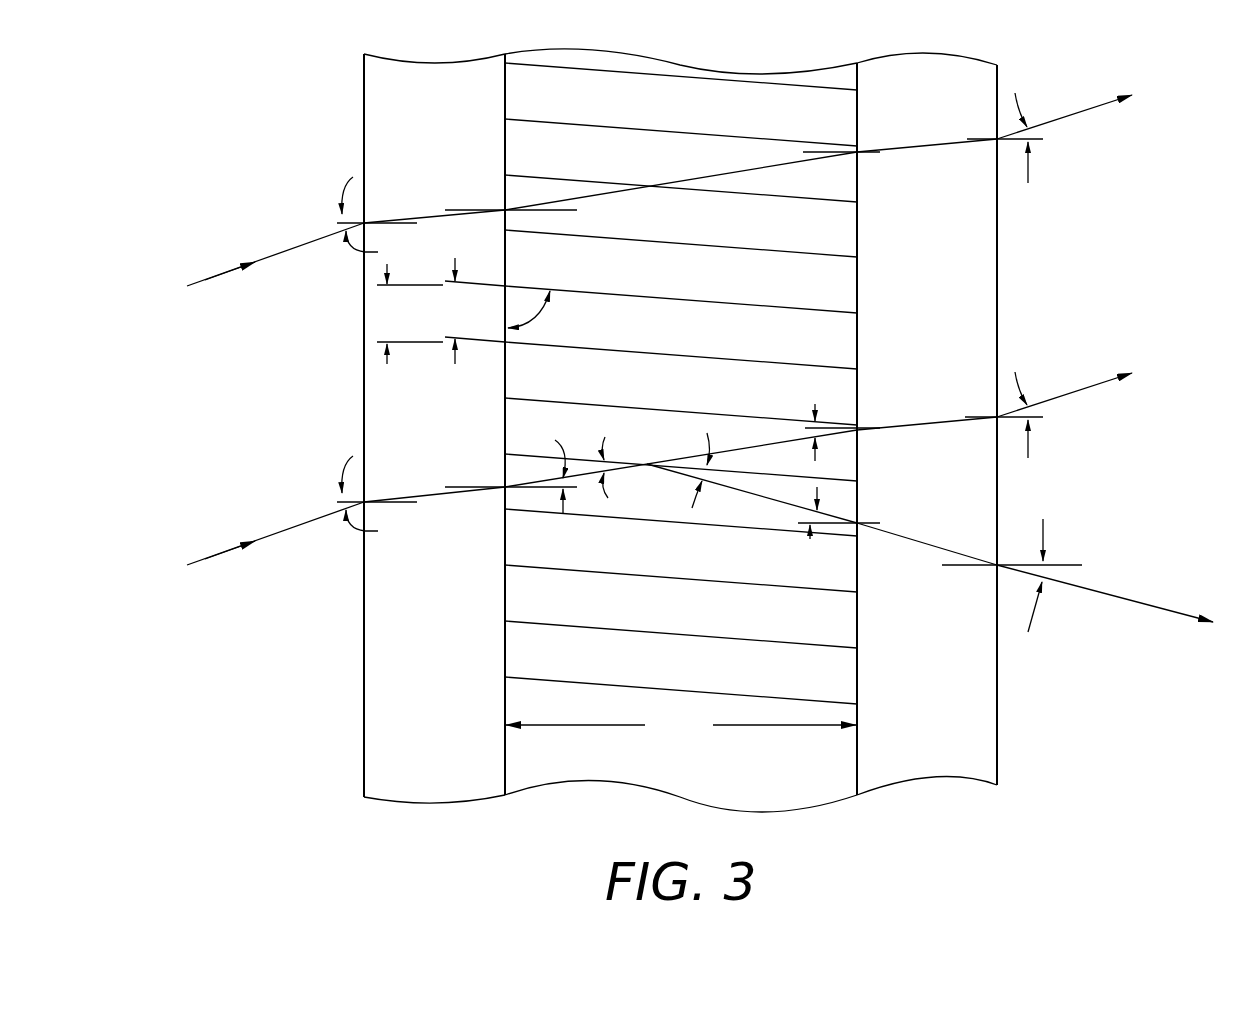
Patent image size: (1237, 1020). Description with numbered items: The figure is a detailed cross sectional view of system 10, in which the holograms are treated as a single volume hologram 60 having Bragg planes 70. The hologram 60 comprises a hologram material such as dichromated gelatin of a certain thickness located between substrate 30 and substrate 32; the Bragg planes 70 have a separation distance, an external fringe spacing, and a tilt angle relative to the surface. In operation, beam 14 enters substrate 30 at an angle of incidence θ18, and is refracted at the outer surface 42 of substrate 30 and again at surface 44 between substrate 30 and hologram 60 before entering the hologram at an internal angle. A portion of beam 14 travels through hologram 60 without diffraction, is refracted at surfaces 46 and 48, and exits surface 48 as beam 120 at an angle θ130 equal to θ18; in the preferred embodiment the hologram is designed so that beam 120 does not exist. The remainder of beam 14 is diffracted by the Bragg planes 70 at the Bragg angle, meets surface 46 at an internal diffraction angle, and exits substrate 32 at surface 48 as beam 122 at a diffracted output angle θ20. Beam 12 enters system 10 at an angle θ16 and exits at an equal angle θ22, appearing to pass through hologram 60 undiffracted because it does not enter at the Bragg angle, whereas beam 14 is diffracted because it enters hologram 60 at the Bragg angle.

The system 10 is at (421, 822).
The beam 12 is at (214, 282).
The beam 14 is at (214, 561).
The angle θ 16 is at (337, 207).
The angle θ 18 is at (337, 482).
The diffracted output angle θ 20 is at (1053, 583).
The angle θ 22 is at (994, 125).
The substrate 30 is at (428, 706).
The substrate 32 is at (936, 746).
The outer surface 42 is at (364, 660).
The surface 44 is at (505, 635).
The surface 46 is at (860, 689).
The surface 48 is at (1001, 696).
The volume hologram 60 is at (617, 424).
The Bragg planes 70 is at (643, 297).
The beam 120 is at (1068, 388).
The beam 122 is at (1145, 603).
The angle θ 130 is at (1050, 421).